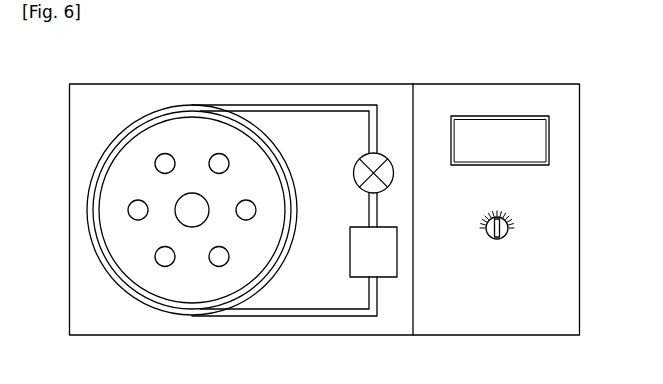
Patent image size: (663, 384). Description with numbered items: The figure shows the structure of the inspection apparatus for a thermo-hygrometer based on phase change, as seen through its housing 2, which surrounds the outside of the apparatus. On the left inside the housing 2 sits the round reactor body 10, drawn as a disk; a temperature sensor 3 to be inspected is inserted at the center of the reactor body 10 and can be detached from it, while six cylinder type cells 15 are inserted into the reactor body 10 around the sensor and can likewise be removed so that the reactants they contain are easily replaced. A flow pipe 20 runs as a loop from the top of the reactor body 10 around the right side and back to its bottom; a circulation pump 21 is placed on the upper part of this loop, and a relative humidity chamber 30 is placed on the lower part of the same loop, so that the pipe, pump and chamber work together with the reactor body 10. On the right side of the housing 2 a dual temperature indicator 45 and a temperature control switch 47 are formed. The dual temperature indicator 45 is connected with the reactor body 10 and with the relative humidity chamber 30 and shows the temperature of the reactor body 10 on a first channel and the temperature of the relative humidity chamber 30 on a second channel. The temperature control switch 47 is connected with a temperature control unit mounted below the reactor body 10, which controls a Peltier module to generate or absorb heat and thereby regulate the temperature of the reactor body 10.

The housing 2 is at (228, 84).
The temperature sensor 3 is at (193, 200).
The reactor body 10 is at (130, 233).
The cylinder type cell 15 is at (163, 264).
The flow pipe 20 is at (322, 104).
The circulation pump 21 is at (379, 155).
The relative humidity chamber 30 is at (383, 278).
The dual temperature indicator 45 is at (497, 116).
The temperature control switch 47 is at (487, 239).